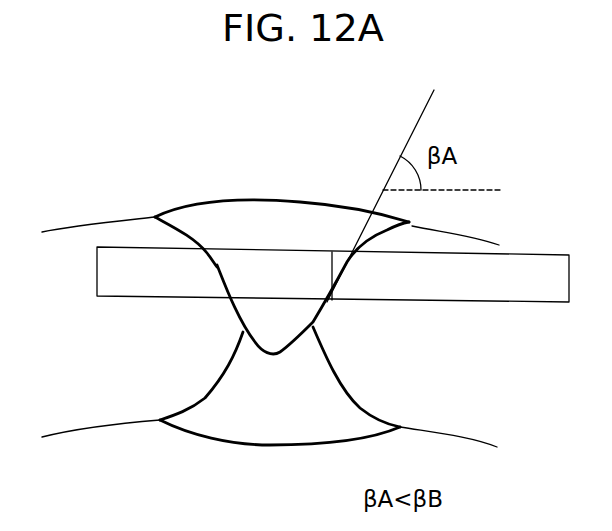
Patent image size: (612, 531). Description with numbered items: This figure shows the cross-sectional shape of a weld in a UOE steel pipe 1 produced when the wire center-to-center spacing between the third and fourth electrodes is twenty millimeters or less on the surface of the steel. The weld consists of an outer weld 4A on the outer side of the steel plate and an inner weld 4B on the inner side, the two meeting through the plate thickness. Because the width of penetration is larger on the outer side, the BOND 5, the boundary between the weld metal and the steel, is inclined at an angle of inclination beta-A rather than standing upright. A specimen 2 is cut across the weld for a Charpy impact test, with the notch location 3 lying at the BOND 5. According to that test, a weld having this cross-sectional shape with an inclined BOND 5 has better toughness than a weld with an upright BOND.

The UOE steel pipe 1 is at (68, 255).
The specimen 2 is at (514, 292).
The notch location 3 is at (343, 267).
The outer weld 4A is at (253, 228).
The inner weld 4B is at (230, 432).
The BOND 5 is at (217, 278).